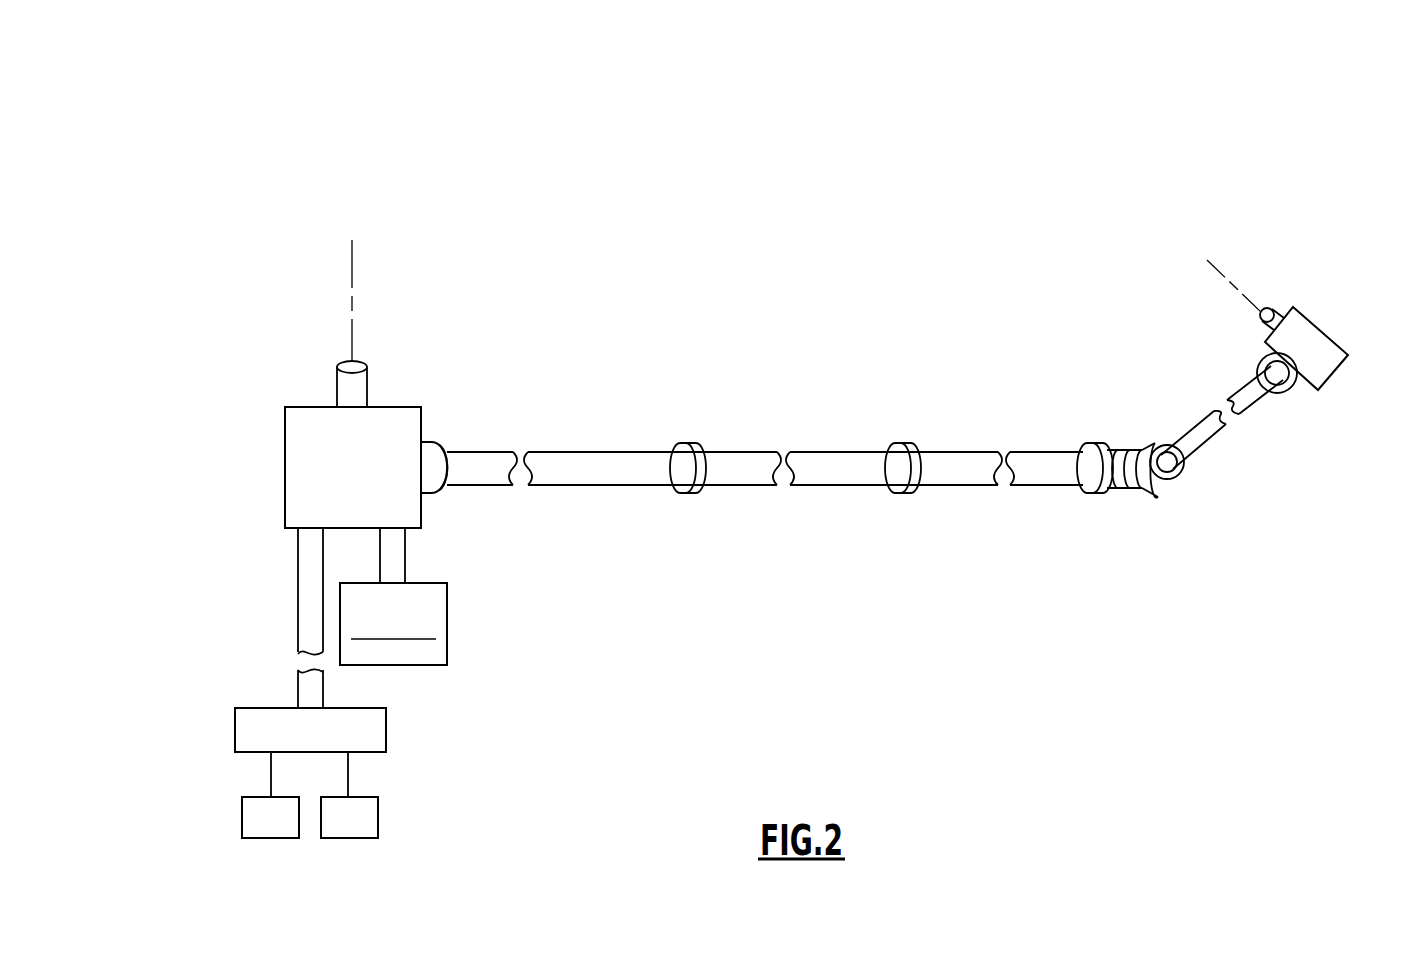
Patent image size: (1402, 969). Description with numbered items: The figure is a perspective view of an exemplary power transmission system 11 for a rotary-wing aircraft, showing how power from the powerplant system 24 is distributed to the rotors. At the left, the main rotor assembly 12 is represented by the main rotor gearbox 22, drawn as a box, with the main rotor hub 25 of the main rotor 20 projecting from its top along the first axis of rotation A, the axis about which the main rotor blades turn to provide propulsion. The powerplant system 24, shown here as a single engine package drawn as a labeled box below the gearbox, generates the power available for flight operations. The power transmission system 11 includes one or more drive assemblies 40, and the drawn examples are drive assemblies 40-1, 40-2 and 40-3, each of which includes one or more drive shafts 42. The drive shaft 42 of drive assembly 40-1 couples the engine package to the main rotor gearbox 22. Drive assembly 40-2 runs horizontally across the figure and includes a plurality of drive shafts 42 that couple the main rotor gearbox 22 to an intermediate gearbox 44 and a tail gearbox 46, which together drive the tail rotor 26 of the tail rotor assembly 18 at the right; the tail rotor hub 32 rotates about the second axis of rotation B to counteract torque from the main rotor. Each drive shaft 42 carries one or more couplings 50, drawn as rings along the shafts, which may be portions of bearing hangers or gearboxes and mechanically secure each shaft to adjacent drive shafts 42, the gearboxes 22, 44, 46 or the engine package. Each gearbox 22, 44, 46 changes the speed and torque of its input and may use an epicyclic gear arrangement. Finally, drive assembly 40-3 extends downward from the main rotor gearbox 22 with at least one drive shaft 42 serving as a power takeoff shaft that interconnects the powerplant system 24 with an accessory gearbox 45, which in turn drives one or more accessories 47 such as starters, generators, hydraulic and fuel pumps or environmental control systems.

The power transmission system 11 is at (258, 128).
The main rotor assembly 12 is at (241, 250).
The tail rotor assembly 18 is at (1138, 303).
The main rotor 20 is at (288, 376).
The main rotor gearbox 22 is at (411, 405).
The powerplant system 24 is at (490, 614).
The main rotor hub 25 is at (368, 384).
The tail rotor 26 is at (1320, 316).
The tail rotor hub 32 is at (1277, 312).
The drive assembly 40 is at (794, 530).
The drive assembly 40-1 is at (473, 560).
The drive assembly 40-2 is at (660, 316).
The drive assembly 40-3 is at (246, 563).
The drive shaft 42 is at (406, 552).
The intermediate gearbox 44 is at (1160, 497).
The accessory gearbox 45 is at (386, 732).
The tail gearbox 46 is at (1338, 375).
The accessories 47 is at (283, 838).
The coupling 50 is at (441, 446).
The first axis of rotation A is at (354, 277).
The second axis of rotation B is at (1223, 273).